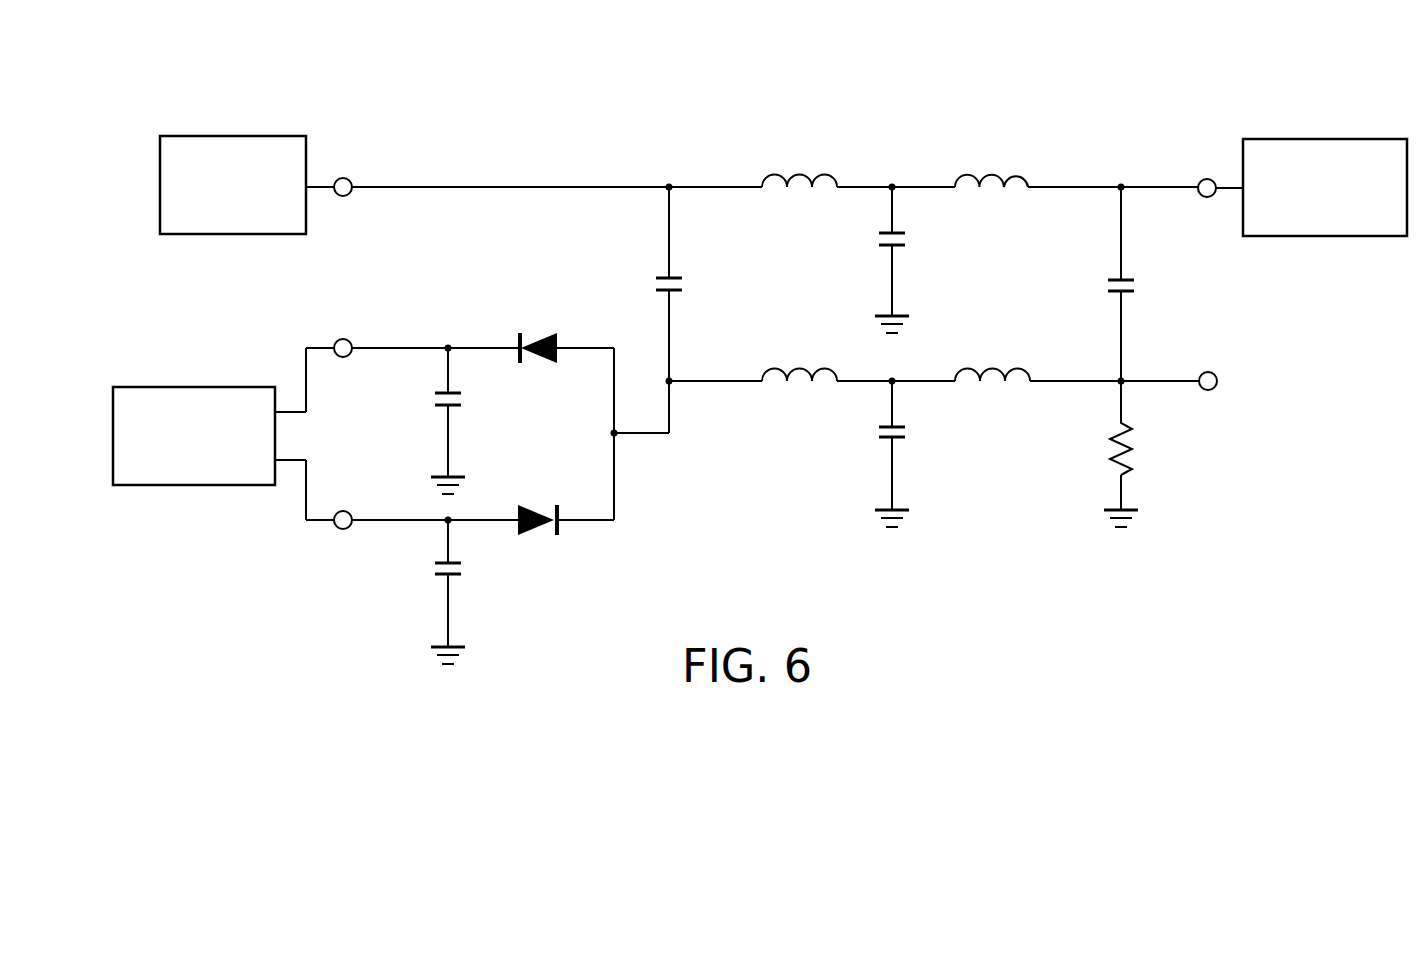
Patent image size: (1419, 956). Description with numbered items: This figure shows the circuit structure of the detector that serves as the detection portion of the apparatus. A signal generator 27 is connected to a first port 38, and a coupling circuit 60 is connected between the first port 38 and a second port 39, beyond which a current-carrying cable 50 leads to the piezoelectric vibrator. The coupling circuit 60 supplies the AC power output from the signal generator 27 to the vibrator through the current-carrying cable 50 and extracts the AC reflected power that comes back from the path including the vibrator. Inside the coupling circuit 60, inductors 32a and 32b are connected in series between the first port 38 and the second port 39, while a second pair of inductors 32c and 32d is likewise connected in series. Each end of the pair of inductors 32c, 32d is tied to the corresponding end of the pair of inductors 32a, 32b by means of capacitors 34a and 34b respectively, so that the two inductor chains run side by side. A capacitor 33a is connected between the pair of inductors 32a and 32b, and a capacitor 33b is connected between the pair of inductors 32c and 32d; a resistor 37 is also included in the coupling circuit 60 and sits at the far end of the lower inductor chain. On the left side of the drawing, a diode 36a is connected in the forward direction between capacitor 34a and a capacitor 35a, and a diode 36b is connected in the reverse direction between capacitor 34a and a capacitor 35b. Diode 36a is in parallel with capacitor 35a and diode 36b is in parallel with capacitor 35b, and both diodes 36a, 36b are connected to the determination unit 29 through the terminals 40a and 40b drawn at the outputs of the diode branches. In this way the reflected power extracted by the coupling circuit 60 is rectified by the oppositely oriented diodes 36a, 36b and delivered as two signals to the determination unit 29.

The signal generator 27 is at (243, 135).
The determination unit 29 is at (208, 386).
The inductor 32a is at (800, 172).
The inductor 32b is at (993, 172).
The inductor 32c is at (800, 368).
The inductor 32d is at (995, 368).
The capacitor 33a is at (912, 238).
The capacitor 33b is at (912, 432).
The capacitor 34a is at (690, 283).
The capacitor 34b is at (1142, 285).
The capacitor 35a is at (467, 398).
The capacitor 35b is at (467, 569).
The diode 36a is at (541, 333).
The diode 36b is at (541, 505).
The resistor 37 is at (1140, 447).
The first port 38 is at (345, 175).
The second port 39 is at (1208, 176).
The terminal 40a is at (344, 337).
The terminal 40b is at (344, 510).
The current-carrying cable 50 is at (1320, 138).
The coupling circuit 60 is at (866, 152).